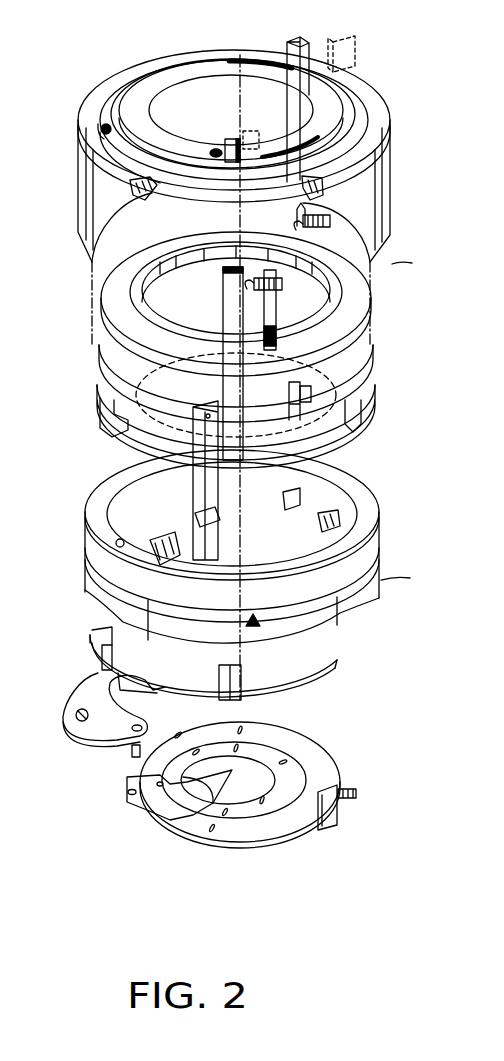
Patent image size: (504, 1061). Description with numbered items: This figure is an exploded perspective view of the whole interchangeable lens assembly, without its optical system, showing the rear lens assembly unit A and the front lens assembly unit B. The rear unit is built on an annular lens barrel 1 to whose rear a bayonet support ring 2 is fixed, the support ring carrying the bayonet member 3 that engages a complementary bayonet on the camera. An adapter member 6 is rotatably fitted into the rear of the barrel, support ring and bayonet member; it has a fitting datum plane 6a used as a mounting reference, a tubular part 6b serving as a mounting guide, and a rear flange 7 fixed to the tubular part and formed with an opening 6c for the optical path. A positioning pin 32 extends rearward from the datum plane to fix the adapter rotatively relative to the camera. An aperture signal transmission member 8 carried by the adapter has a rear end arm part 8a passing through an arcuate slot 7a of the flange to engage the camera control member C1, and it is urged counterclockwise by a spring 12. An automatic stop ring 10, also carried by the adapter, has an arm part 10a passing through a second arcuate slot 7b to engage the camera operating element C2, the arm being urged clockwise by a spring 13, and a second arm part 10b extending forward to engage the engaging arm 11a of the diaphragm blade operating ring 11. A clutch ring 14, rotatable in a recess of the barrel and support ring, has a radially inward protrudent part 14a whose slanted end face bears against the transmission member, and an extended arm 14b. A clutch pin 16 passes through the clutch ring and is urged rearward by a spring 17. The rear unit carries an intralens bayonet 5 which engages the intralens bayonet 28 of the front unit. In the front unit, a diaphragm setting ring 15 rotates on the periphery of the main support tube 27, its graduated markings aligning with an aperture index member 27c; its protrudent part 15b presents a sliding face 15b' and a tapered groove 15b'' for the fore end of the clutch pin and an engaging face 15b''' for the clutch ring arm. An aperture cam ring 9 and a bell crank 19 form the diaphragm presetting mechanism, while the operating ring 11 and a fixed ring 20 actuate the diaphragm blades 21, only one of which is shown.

The lens barrel 1 is at (360, 355).
The bayonet support ring 2 is at (378, 201).
The bayonet member 3 is at (363, 137).
The intralens bayonet 5 is at (353, 423).
The adapter member 6 is at (357, 125).
The fitting datum plane 6a is at (172, 190).
The tubular part 6b is at (140, 150).
The opening 6c is at (220, 90).
The rear flange 7 is at (157, 80).
The arcuate slot 7a is at (213, 156).
The arcuate slot 7b is at (262, 55).
The aperture signal transmission member 8 is at (236, 350).
The rear end arm part 8a is at (228, 138).
The aperture cam ring 9 is at (333, 655).
The automatic stop ring 10 is at (183, 315).
The arm part 10a is at (293, 98).
The second arm part 10b is at (300, 318).
The diaphragm blade operating ring 11 is at (240, 827).
The engaging arm 11a is at (330, 788).
The spring 12 is at (283, 281).
The spring 13 is at (337, 222).
The clutch ring 14 is at (130, 358).
The protrudent part 14a is at (253, 353).
The extended arm 14b is at (340, 427).
The diaphragm setting ring 15 is at (380, 540).
The protrudent part 15b is at (380, 508).
The sliding face 15b' is at (310, 485).
The tapered groove 15b'' is at (180, 491).
The engaging face 15b''' is at (103, 553).
The clutch pin 16 is at (312, 408).
The spring 17 is at (300, 392).
The bell crank 19 is at (102, 725).
The fixed ring 20 is at (287, 792).
The diaphragm blade 21 is at (178, 803).
The main support tube 27 is at (342, 598).
The aperture index member 27c is at (260, 622).
The intralens bayonet 28 is at (353, 473).
The positioning pin 32 is at (100, 128).
The upper unit A is at (441, 271).
The lower unit B is at (437, 586).
The control member C1 is at (254, 130).
The operating element C2 is at (346, 40).